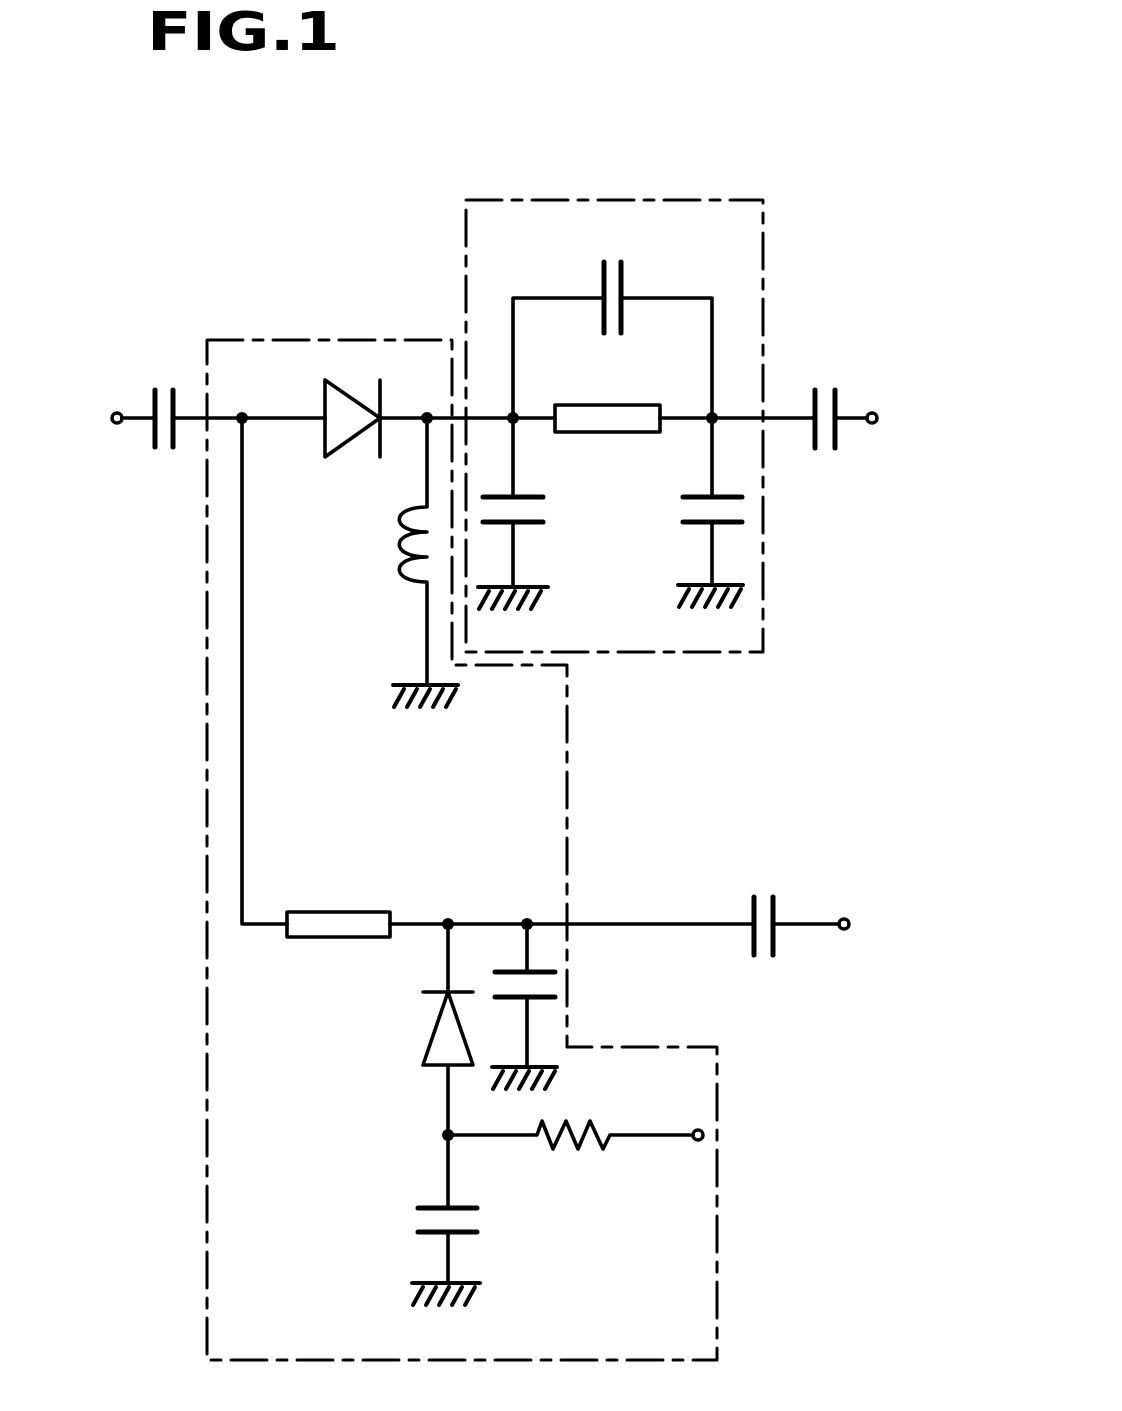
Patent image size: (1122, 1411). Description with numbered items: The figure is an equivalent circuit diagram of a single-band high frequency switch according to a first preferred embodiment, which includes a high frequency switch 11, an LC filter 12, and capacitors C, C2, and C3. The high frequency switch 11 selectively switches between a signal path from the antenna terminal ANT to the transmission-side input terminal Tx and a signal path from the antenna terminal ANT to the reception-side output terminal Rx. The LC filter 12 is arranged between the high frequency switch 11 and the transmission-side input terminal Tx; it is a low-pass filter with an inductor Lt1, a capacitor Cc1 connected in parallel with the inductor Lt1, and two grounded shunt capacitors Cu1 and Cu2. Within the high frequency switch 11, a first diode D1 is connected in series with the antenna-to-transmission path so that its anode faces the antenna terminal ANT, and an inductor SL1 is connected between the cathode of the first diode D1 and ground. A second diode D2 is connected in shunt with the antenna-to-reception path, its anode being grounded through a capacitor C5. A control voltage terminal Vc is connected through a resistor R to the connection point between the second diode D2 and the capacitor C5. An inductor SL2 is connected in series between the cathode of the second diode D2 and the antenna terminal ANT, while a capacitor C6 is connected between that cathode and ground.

The high frequency switch 11 is at (303, 338).
The LC filter 12 is at (625, 197).
The antenna terminal ANT is at (82, 419).
The transmission-side input terminal Tx is at (897, 419).
The reception-side output terminal Rx is at (872, 925).
The control voltage terminal Vc is at (733, 1135).
The capacitor C is at (161, 392).
The first diode D1 is at (353, 445).
The inductor SL1 is at (389, 562).
The capacitor Cc1 is at (612, 340).
The inductor Lt1 is at (607, 447).
The ground capacitor Cu1 is at (545, 513).
The ground capacitor Cu2 is at (748, 512).
The capacitor C2 is at (823, 389).
The capacitor C3 is at (762, 896).
The inductor SL2 is at (338, 954).
The second diode D2 is at (422, 1029).
The capacitor C6 is at (556, 1006).
The resistor R is at (570, 1166).
The capacitor C5 is at (423, 1220).